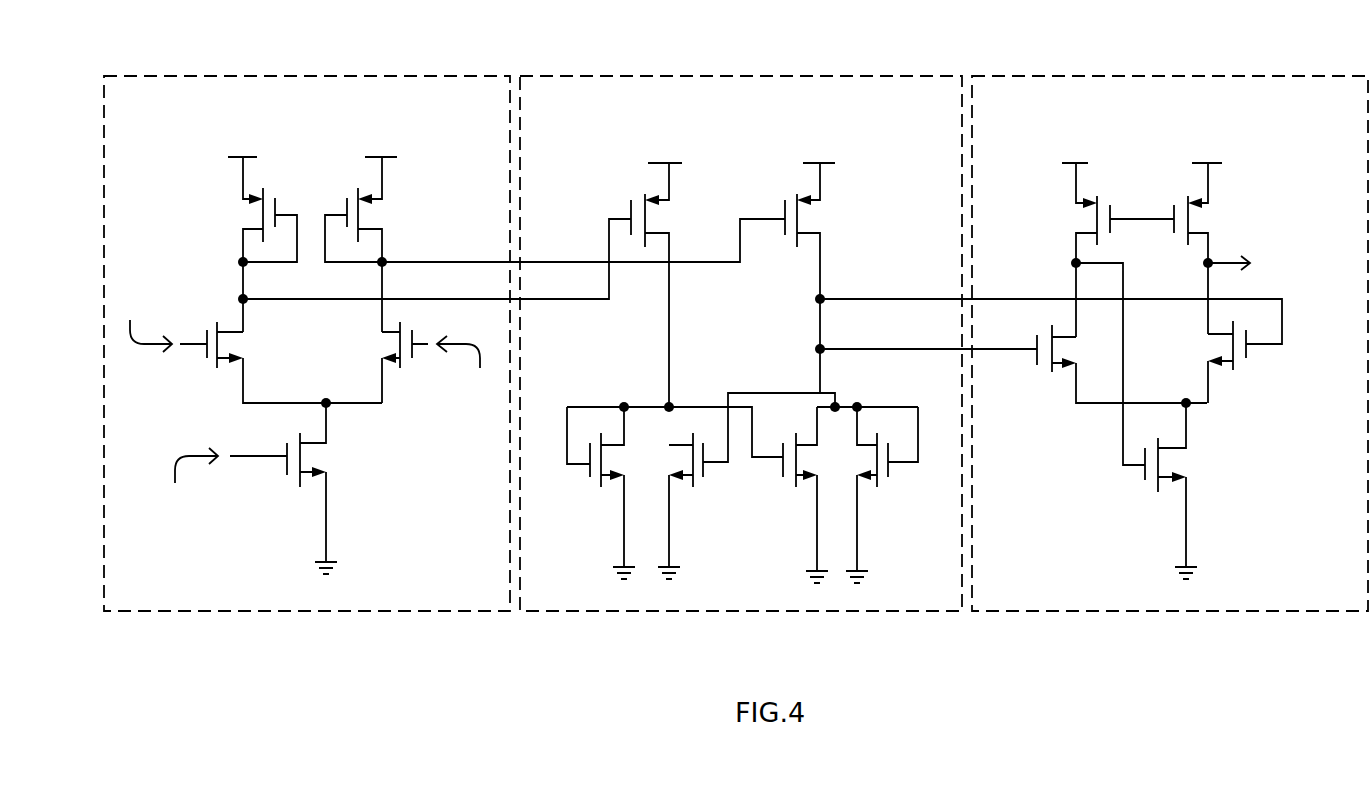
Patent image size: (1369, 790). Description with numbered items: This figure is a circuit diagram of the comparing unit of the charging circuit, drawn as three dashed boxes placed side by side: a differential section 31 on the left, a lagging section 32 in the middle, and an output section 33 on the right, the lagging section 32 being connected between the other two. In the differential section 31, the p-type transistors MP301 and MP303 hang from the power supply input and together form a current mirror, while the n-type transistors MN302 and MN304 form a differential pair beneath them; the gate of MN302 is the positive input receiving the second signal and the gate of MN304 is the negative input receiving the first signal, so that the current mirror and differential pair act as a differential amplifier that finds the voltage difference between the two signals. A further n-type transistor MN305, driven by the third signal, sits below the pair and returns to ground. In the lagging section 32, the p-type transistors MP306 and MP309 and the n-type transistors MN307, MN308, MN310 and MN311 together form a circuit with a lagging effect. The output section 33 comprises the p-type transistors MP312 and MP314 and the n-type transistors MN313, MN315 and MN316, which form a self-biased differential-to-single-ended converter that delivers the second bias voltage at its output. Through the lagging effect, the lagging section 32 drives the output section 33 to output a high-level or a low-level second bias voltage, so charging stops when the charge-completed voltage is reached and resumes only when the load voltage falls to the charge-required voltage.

The differential section 31 is at (222, 611).
The lagging section 32 is at (652, 610).
The output section 33 is at (1140, 611).
The p-type transistor MP301 is at (217, 244).
The p-type transistor MP303 is at (405, 244).
The n-type transistor MN302 is at (256, 363).
The n-type transistor MN304 is at (352, 362).
The n-type transistor MN305 is at (331, 488).
The p-type transistor MP306 is at (688, 285).
The p-type transistor MP309 is at (833, 278).
The n-type transistor MN307 is at (581, 493).
The n-type transistor MN308 is at (746, 486).
The n-type transistor MN310 is at (768, 495).
The n-type transistor MN311 is at (902, 495).
The p-type transistor MP312 is at (1075, 250).
The p-type transistor MP314 is at (1245, 248).
The n-type transistor MN313 is at (1112, 383).
The n-type transistor MN315 is at (1263, 363).
The n-type transistor MN316 is at (1205, 491).